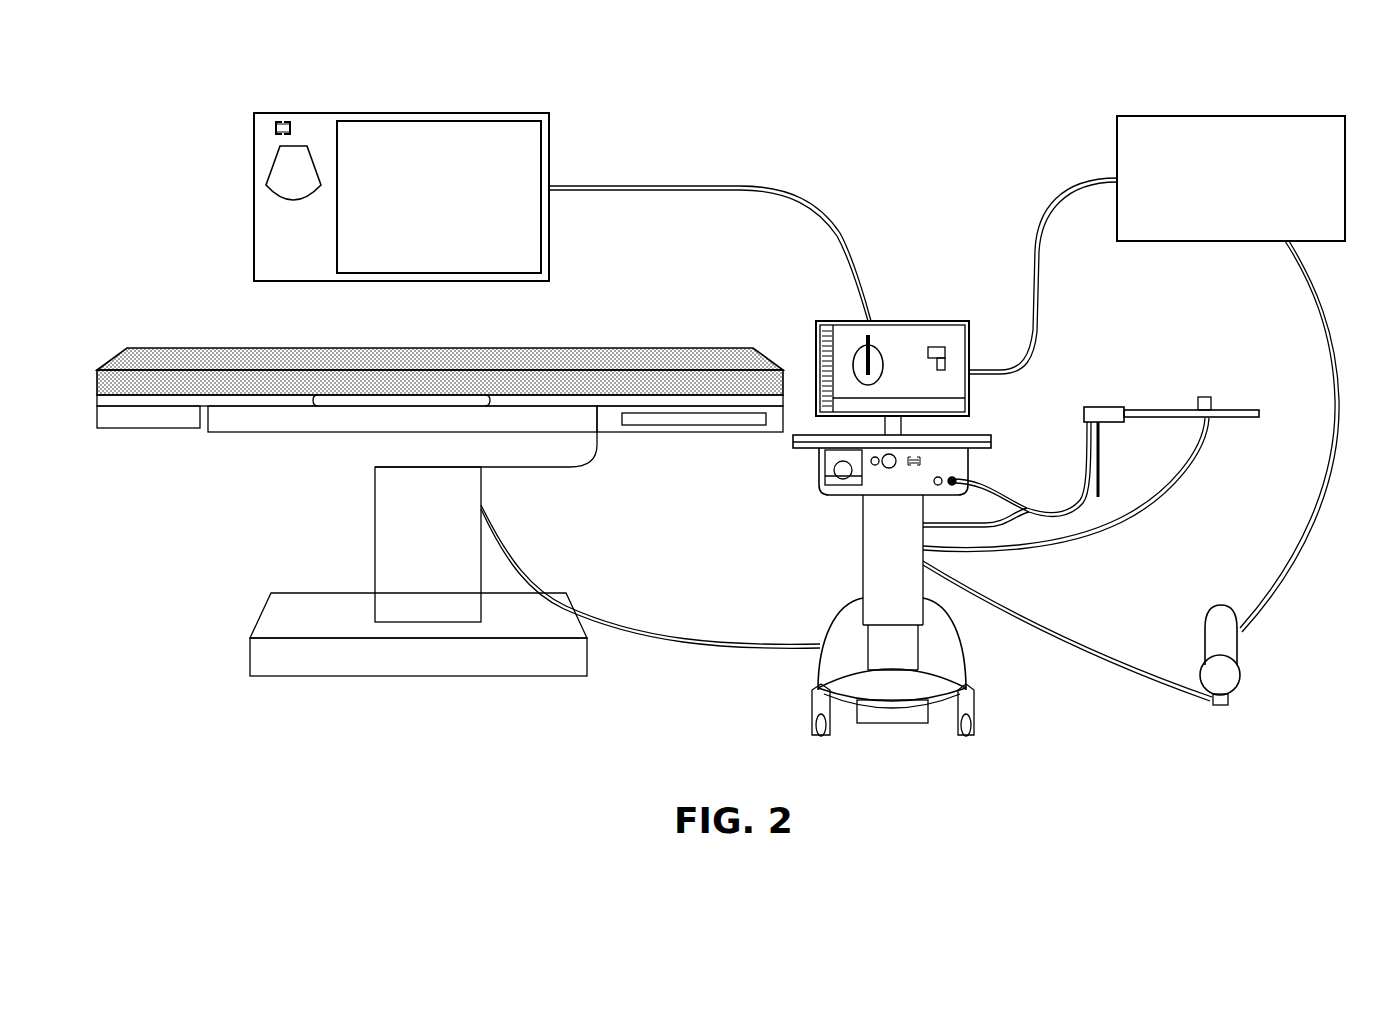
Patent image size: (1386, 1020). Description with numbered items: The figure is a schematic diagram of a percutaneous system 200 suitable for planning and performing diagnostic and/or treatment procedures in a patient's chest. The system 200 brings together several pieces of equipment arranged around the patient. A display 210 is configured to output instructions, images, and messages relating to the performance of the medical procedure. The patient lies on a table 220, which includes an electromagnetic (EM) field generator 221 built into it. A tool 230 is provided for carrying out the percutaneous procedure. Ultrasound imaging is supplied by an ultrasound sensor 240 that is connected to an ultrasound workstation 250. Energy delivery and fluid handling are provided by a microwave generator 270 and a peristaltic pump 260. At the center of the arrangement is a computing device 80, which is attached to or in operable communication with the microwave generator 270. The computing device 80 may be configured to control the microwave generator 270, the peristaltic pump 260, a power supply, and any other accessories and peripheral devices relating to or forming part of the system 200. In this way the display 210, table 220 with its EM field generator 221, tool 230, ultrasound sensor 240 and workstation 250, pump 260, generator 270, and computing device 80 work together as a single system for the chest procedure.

The percutaneous system 200 is at (312, 70).
The display 210 is at (549, 136).
The computing device 80 is at (947, 321).
The ultrasound workstation 250 is at (1296, 116).
The table 220 is at (172, 348).
The electromagnetic (EM) field generator 221 is at (325, 410).
The peristaltic pump 260 is at (862, 540).
The microwave generator 270 is at (824, 463).
The tool 230 is at (1106, 407).
The ultrasound sensor 240 is at (1220, 605).